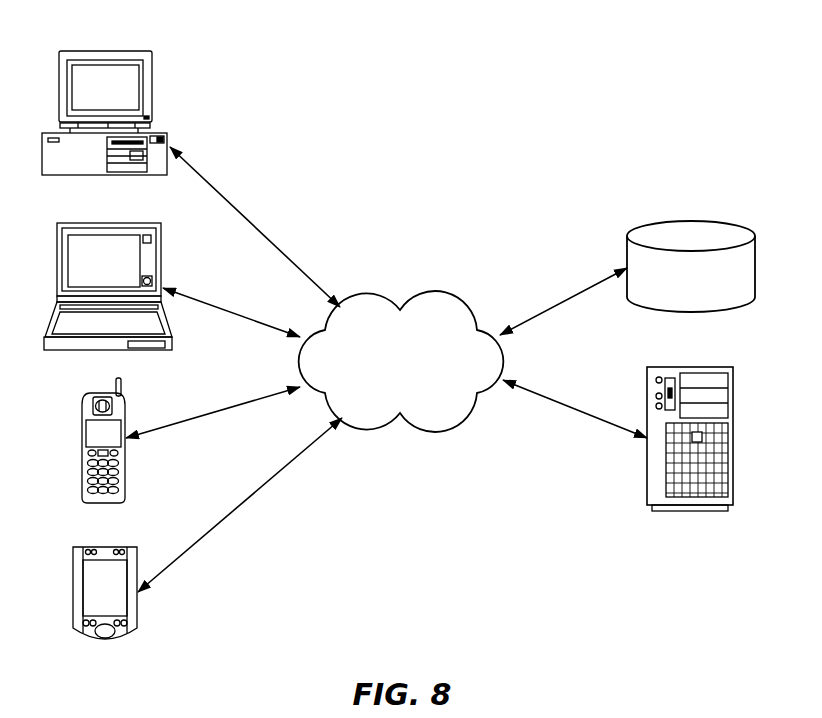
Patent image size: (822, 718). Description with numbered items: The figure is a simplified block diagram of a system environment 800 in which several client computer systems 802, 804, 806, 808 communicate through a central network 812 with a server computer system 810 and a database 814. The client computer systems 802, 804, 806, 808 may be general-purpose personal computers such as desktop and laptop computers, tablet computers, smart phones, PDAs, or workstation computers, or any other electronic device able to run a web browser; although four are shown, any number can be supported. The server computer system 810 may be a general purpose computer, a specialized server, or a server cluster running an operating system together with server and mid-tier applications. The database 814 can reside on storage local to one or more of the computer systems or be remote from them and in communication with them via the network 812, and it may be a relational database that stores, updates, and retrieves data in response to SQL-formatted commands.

The system environment 800 is at (686, 82).
The client computer system 802 is at (78, 51).
The client computer system 804 is at (78, 223).
The client computer system 806 is at (86, 407).
The client computer system 808 is at (84, 548).
The server computer system 810 is at (723, 367).
The network 812 is at (401, 361).
The database 814 is at (725, 222).